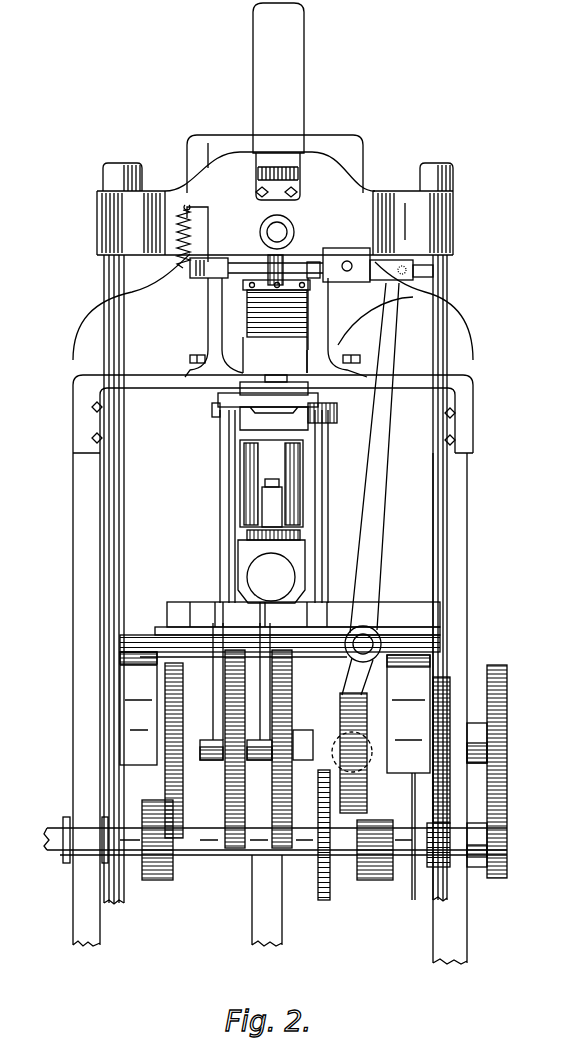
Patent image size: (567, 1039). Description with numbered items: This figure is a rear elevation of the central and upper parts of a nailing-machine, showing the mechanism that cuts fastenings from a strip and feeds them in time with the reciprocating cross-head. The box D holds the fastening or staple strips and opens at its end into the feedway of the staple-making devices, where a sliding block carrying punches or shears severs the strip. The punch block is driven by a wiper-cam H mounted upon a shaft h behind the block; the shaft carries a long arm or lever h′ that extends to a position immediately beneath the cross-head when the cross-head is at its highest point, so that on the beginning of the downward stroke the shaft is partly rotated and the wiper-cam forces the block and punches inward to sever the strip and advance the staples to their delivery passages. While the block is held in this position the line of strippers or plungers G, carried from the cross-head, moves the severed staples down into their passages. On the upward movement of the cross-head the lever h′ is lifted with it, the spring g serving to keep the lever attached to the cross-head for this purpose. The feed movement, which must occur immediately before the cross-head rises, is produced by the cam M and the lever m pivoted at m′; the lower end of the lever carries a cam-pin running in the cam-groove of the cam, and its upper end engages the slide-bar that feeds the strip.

The strippers or plungers G is at (257, 182).
The wiper-cam H is at (270, 260).
The box D is at (348, 262).
The spring g is at (192, 236).
The long arm or lever h′ is at (190, 280).
The shaft h is at (242, 268).
The lever m is at (375, 495).
The pivot m′ is at (373, 627).
The cam M is at (353, 717).